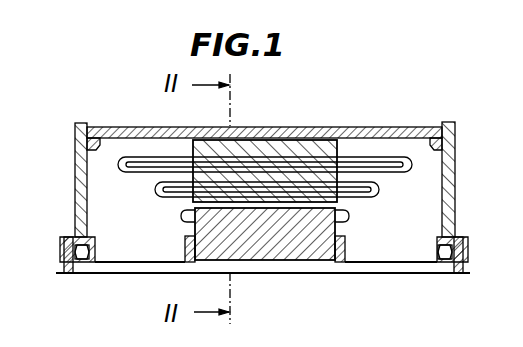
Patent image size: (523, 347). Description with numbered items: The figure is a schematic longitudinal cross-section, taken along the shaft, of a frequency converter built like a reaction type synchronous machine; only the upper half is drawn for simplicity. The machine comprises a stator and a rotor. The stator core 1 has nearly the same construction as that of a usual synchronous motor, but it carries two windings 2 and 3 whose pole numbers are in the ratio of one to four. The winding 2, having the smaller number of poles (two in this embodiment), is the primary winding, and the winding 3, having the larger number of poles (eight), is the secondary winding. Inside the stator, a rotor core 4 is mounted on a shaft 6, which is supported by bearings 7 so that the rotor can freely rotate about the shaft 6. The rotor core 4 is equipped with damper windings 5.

The stator core 1 is at (295, 150).
The primary winding 2 is at (383, 160).
The secondary winding 3 is at (379, 190).
The rotor core 4 is at (272, 252).
The damper windings 5 is at (345, 212).
The shaft 6 is at (392, 263).
The bearings 7 is at (449, 274).